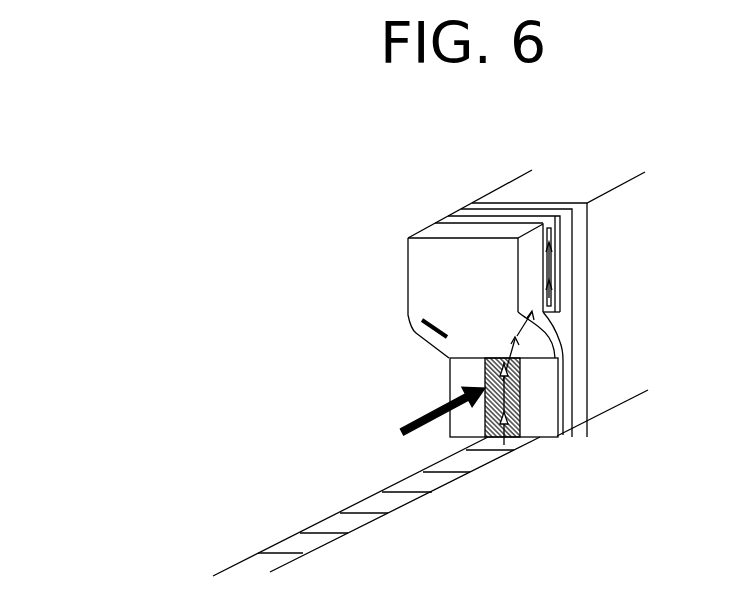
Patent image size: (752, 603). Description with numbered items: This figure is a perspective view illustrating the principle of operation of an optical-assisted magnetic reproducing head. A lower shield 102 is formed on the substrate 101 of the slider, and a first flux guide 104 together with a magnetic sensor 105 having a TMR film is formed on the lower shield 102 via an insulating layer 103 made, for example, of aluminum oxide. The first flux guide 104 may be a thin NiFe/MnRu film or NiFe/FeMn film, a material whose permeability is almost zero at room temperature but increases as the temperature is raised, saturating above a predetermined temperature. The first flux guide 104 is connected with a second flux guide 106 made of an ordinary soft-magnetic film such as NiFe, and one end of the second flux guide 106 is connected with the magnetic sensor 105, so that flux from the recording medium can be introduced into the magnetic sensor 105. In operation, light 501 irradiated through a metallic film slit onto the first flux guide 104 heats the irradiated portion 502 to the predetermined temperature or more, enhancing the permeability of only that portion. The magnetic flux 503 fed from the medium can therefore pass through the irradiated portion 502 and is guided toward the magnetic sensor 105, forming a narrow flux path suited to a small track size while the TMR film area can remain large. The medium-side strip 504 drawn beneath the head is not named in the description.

The substrate 101 is at (525, 185).
The lower shield 102 is at (577, 257).
The insulating layer 103 is at (560, 328).
The first flux guide 104 is at (560, 405).
The magnetic sensor 105 is at (553, 286).
The second flux guide 106 is at (425, 311).
The light 501 is at (412, 422).
The irradiated portion 502 is at (520, 437).
The magnetic flux 503 is at (485, 380).
The conveyor belt 504 is at (480, 458).